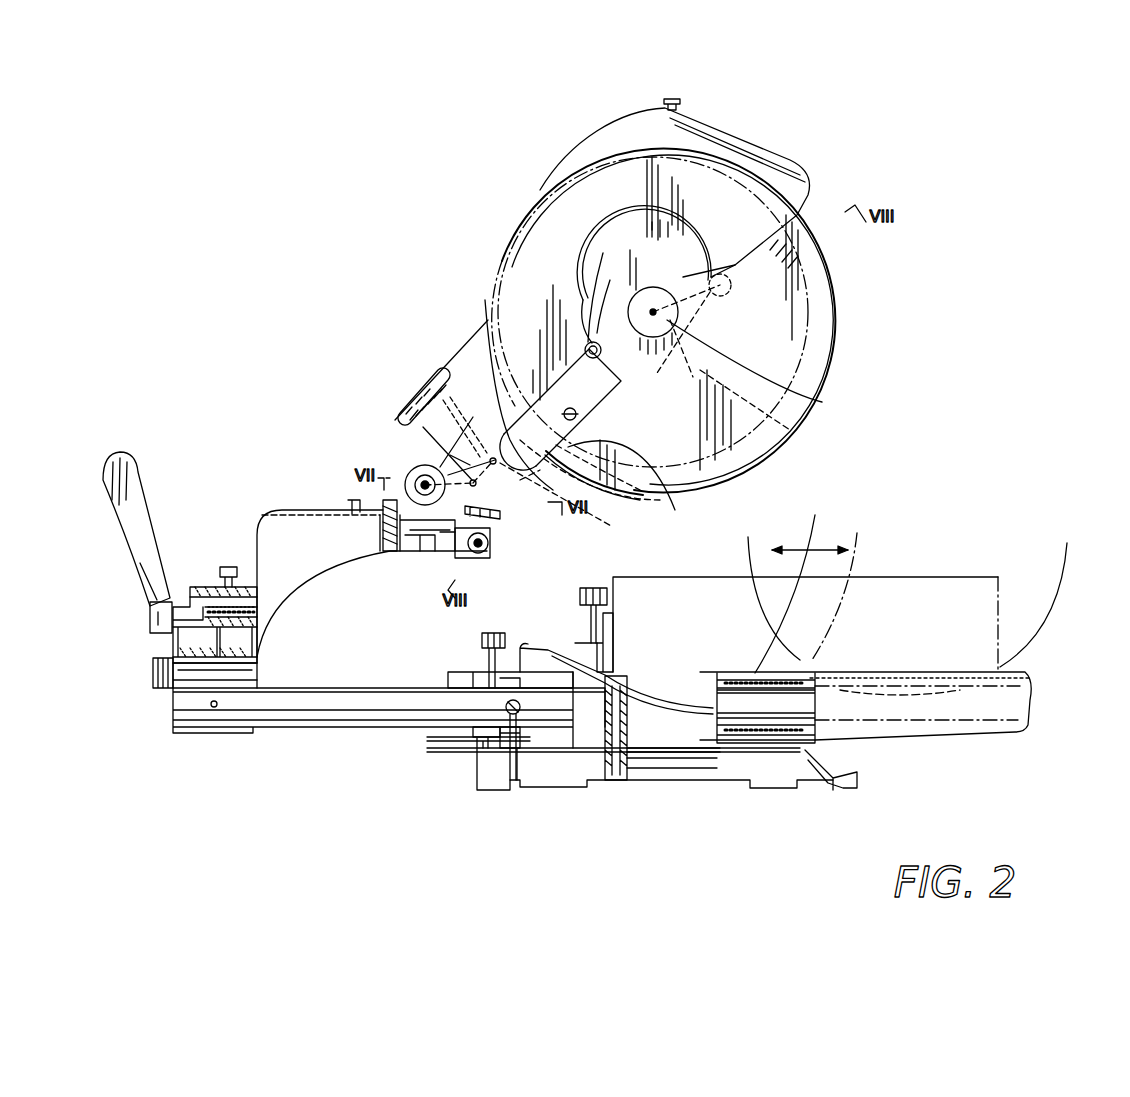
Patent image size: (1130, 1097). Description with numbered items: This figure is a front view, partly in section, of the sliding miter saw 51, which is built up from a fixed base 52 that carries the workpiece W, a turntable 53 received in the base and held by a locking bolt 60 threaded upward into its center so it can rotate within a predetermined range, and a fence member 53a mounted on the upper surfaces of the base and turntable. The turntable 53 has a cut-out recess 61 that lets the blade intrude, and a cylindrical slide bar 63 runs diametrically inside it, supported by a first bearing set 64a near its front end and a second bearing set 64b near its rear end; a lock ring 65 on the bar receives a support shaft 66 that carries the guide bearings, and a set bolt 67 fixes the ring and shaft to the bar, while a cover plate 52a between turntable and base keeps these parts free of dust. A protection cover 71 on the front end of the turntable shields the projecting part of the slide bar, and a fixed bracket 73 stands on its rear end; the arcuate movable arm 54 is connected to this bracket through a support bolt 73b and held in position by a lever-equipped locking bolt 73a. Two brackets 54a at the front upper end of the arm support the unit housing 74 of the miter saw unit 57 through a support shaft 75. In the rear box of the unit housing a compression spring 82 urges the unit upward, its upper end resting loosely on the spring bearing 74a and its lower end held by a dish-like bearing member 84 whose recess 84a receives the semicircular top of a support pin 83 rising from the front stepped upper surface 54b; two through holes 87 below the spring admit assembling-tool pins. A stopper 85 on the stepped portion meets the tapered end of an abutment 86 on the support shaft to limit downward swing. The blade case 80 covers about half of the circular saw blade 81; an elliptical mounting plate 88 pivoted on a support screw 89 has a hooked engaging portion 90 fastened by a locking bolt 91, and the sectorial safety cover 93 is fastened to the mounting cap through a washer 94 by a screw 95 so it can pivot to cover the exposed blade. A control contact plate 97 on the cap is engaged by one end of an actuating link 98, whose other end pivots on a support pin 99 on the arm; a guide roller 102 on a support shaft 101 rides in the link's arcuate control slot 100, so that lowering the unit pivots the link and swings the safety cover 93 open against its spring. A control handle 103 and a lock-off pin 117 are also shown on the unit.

The sliding miter saw 51 is at (456, 342).
The fixed base 52 is at (537, 772).
The cover plate 52a is at (660, 760).
The turntable 53 is at (805, 560).
The fence member 53a is at (627, 622).
The movable arm 54 is at (287, 507).
The brackets 54a is at (358, 498).
The front stepped upper surface 54b is at (428, 551).
The miter saw unit 57 is at (506, 224).
The locking bolt 60 is at (618, 782).
The cut-out recess 61 is at (713, 700).
The slide bar 63 is at (355, 728).
The first bearing set 64a is at (825, 775).
The second bearing set 64b is at (480, 770).
The lock ring 65 is at (515, 762).
The support shaft 66 is at (490, 748).
The set bolt 67 is at (512, 742).
The protection cover 71 is at (972, 742).
The fixed bracket 73 is at (208, 735).
The locking bolt 73a is at (186, 590).
The support bolt 73b is at (153, 678).
The unit housing 74 is at (450, 368).
The spring bearing 74a is at (420, 403).
The support shaft 75 is at (412, 470).
The blade case 80 is at (592, 163).
The circular saw blade 81 is at (832, 355).
The compression spring 82 is at (408, 462).
The support pin 83 is at (458, 551).
The bearing member 84 is at (490, 535).
The recess 84a is at (486, 560).
The stopper 85 is at (383, 505).
The abutment 86 is at (397, 540).
The through holes 87 is at (493, 458).
The mounting plate 88 is at (640, 240).
The support screw 89 is at (732, 284).
The hooked engaging portion 90 is at (595, 305).
The locking bolt 91 is at (586, 345).
The safety cover 93 is at (836, 316).
The washer 94 is at (822, 402).
The screw 95 is at (478, 518).
The control contact plate 97 is at (792, 433).
The actuating link 98 is at (528, 474).
The support pin 99 is at (490, 565).
The control slot 100 is at (596, 500).
The support shaft 101 is at (648, 491).
The guide roller 102 is at (672, 482).
The control handle 103 is at (735, 125).
The lock-off pin 117 is at (676, 98).
The workpiece W is at (956, 577).